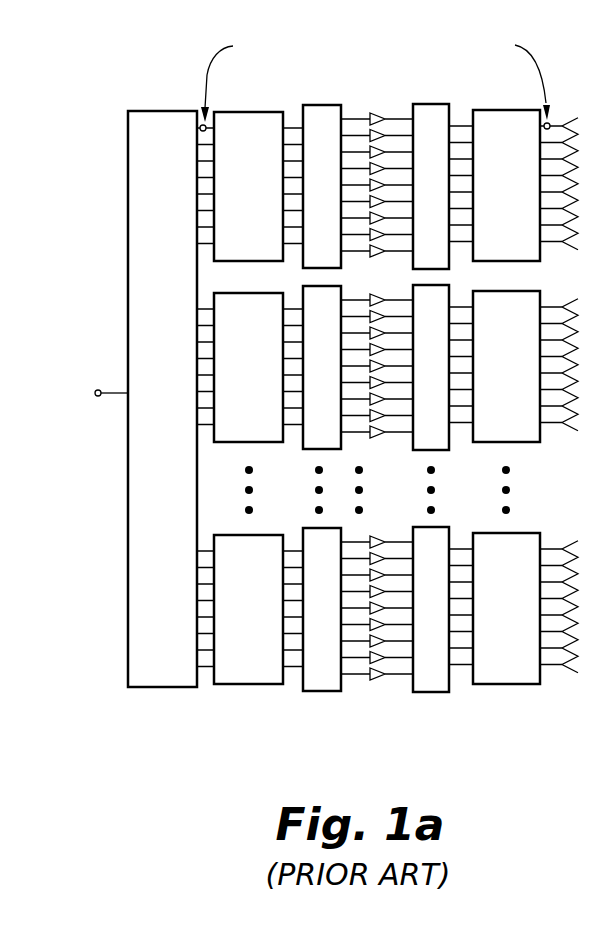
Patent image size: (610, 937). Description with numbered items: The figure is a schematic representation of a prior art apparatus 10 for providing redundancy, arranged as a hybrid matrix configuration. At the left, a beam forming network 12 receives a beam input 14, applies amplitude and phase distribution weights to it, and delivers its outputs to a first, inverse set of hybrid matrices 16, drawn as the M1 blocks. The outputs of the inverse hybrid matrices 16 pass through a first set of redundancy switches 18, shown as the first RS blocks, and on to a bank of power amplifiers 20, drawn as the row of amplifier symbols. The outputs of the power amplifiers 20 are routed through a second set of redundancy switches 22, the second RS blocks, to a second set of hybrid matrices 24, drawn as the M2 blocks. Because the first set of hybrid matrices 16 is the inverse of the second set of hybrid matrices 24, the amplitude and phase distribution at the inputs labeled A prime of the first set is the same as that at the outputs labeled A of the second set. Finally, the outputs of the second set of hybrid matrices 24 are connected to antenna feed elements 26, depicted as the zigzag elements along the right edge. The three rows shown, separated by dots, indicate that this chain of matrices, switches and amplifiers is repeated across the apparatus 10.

The prior art apparatus 10 is at (379, 80).
The beam forming network 12 is at (156, 688).
The beam input 14 is at (94, 392).
The first, inverse set of hybrid matrices 16 is at (241, 708).
The first set of redundancy switches 18 is at (318, 710).
The power amplifiers 20 is at (371, 710).
The second set of redundancy switches 22 is at (427, 712).
The second set of hybrid matrices 24 is at (501, 710).
The antenna feed elements 26 is at (555, 708).